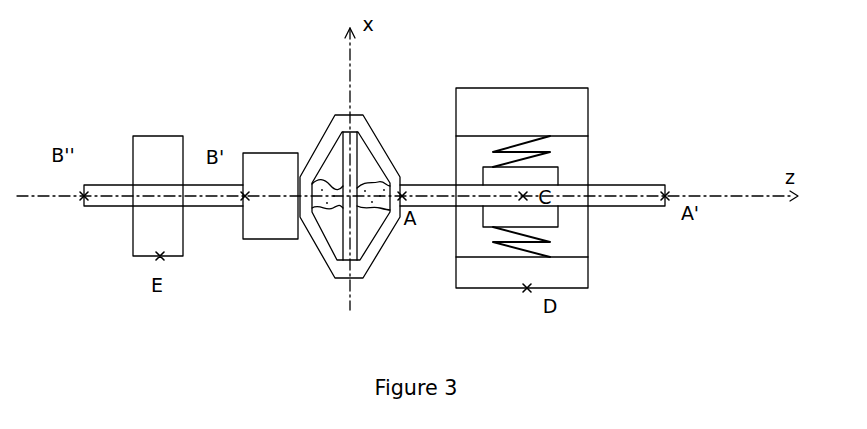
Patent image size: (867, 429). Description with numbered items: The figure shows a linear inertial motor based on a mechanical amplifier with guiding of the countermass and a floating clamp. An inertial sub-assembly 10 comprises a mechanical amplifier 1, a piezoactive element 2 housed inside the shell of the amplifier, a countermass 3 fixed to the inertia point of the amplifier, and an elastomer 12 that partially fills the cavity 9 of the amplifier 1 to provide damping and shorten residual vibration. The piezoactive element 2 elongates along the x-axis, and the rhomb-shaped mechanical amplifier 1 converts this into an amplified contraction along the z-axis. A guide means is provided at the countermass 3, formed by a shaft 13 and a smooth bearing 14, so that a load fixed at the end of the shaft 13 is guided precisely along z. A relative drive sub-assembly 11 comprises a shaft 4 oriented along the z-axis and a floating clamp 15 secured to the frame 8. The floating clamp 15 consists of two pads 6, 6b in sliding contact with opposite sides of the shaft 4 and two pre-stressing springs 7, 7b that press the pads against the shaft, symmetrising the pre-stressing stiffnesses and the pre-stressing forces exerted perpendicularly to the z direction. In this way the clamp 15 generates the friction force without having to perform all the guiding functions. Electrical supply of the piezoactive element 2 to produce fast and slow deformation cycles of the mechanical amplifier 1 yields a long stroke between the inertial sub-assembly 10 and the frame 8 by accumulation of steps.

The mechanical amplifier 1 is at (328, 136).
The piezoactive element 2 is at (343, 233).
The countermass 3 is at (256, 160).
The shaft 4 is at (423, 190).
The pad 6 is at (556, 175).
The pad 6b is at (556, 217).
The pre-stressing spring 7 is at (551, 150).
The pre-stressing spring 7b is at (556, 249).
The frame 8 is at (584, 98).
The cavity 9 is at (370, 230).
The inertial sub-assembly 10 is at (246, 74).
The relative drive sub-assembly 11 is at (692, 63).
The elastomer 12 is at (382, 186).
The shaft 13 is at (99, 190).
The smooth bearing 14 is at (161, 148).
The floating clamp 15 is at (649, 127).